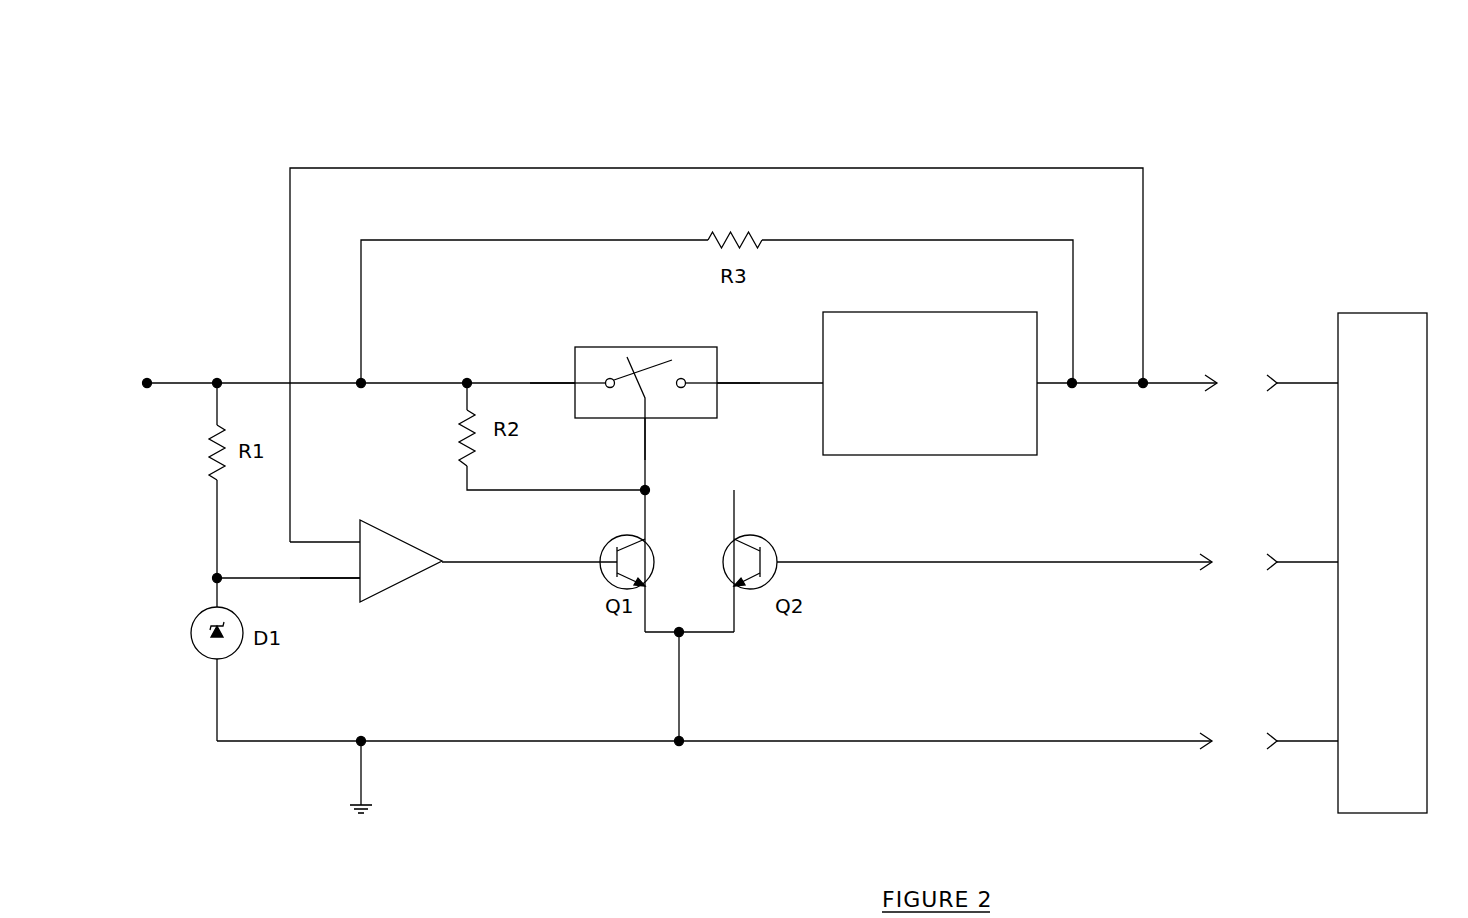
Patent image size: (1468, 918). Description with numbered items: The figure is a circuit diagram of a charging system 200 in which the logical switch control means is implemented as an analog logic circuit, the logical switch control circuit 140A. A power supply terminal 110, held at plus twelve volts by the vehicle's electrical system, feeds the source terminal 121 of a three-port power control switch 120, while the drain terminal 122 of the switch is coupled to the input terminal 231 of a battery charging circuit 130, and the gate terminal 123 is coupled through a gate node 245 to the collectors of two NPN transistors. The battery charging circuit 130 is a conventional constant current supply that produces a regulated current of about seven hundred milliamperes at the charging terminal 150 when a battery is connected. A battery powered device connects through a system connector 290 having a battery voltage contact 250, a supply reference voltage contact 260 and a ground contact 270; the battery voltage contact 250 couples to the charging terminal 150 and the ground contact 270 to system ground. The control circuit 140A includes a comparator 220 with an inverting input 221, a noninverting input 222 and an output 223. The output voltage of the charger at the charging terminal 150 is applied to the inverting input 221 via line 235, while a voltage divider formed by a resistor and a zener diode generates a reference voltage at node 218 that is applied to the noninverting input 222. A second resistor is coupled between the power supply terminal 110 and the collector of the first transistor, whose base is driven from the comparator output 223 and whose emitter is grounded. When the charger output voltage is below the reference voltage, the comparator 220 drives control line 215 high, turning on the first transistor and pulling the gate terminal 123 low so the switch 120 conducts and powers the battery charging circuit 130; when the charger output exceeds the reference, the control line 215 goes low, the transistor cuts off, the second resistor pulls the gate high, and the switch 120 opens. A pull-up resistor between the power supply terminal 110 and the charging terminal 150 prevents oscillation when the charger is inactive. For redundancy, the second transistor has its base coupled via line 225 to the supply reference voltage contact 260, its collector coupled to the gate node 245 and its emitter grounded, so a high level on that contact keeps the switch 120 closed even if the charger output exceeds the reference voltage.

The power supply terminal 110 is at (155, 378).
The power control switch 120 is at (645, 347).
The source terminal 121 is at (573, 382).
The drain terminal 122 is at (718, 382).
The gate terminal 123 is at (647, 420).
The battery charging circuit 130 is at (933, 312).
The logical switch control circuit 140A is at (383, 578).
The charging terminal 150 is at (1213, 392).
The charging system 200 is at (912, 806).
The control line 215 is at (522, 561).
The node 218 is at (215, 576).
The comparator 220 is at (397, 533).
The inverting input 221 is at (358, 540).
The noninverting input 222 is at (358, 582).
The output 223 is at (443, 561).
The line 225 is at (840, 561).
The input terminal 231 is at (821, 384).
The line 235 is at (755, 167).
The gate node 245 is at (643, 488).
The DCIO contact 250 is at (1337, 384).
The VDD contact 260 is at (1337, 563).
The DGND contact 270 is at (1337, 742).
The system connector 290 is at (1383, 313).